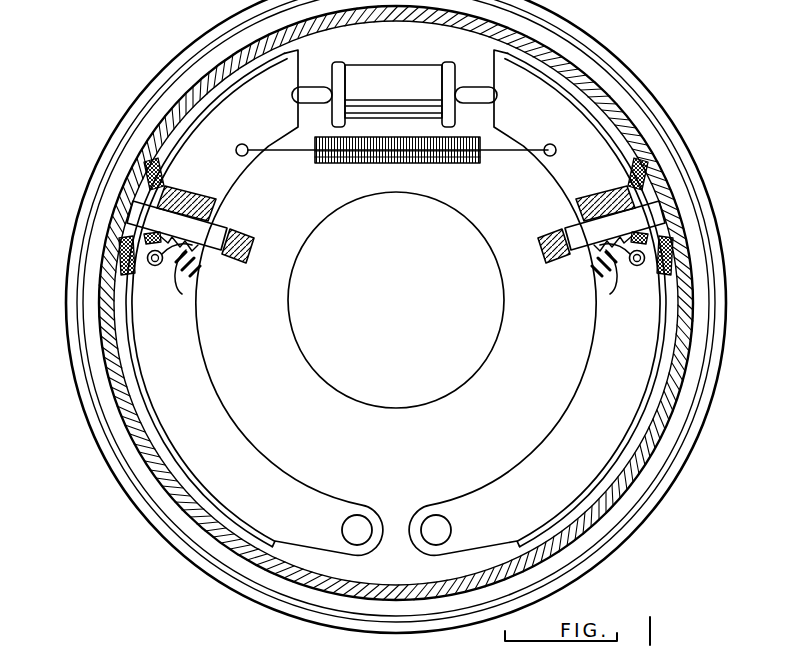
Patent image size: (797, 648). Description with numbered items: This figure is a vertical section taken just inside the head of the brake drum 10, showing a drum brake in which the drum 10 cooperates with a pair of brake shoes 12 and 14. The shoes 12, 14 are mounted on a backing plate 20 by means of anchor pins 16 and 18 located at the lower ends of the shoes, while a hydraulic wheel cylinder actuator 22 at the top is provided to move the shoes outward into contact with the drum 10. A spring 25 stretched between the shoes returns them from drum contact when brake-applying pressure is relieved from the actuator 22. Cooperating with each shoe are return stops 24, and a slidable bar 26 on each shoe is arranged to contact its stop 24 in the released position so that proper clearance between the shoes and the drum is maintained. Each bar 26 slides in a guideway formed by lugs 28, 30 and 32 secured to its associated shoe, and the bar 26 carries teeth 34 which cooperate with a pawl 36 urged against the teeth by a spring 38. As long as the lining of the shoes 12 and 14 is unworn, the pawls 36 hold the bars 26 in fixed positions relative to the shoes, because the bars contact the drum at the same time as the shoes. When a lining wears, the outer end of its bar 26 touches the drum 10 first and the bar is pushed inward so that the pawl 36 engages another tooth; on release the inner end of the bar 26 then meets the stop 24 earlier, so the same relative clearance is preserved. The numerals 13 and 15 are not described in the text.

The brake drum 10 is at (660, 427).
The brake shoe 12 is at (181, 428).
The friction lining 13 is at (125, 359).
The brake shoe 14 is at (627, 393).
The friction lining 15 is at (570, 81).
The anchor pin 16 is at (436, 523).
The anchor pin 18 is at (359, 524).
The backing plate 20 is at (412, 421).
The hydraulic wheel cylinder actuator 22 is at (400, 78).
The return stop 24 is at (255, 242).
The spring 25 is at (384, 164).
The slidable bar 26 is at (212, 233).
The lug 28 is at (214, 200).
The lug 30 is at (200, 263).
The lug 32 is at (123, 247).
The teeth 34 is at (187, 230).
The pawl 36 is at (151, 266).
The spring 38 is at (182, 294).